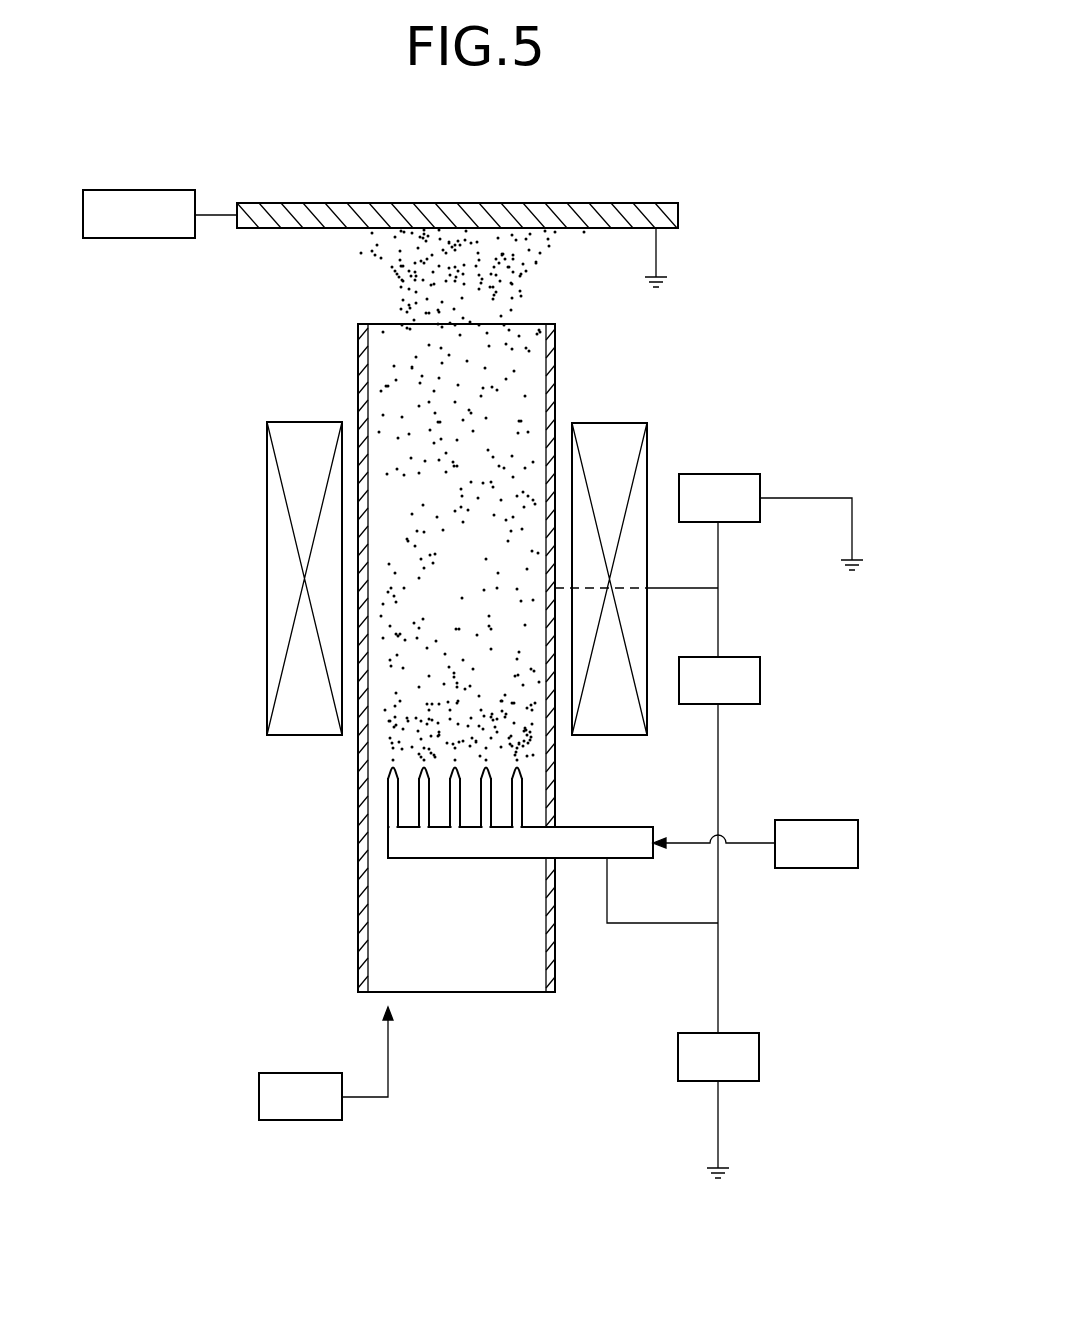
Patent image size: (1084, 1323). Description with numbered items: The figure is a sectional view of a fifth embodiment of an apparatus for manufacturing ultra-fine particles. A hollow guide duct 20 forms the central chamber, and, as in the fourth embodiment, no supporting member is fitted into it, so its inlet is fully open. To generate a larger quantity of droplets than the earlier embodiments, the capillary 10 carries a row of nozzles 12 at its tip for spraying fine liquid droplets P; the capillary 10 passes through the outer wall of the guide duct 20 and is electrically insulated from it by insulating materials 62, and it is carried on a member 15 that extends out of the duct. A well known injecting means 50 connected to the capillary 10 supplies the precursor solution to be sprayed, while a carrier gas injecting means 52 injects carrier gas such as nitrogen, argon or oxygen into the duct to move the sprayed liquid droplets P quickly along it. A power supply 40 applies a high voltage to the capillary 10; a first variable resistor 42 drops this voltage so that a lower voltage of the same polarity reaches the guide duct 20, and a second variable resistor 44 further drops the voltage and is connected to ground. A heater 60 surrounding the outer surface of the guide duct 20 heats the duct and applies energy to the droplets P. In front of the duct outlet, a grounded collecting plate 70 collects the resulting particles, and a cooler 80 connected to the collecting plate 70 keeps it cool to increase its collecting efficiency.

The capillary 10 is at (388, 815).
The nozzle 12 is at (390, 768).
The nozzle support / manifold 15 is at (627, 828).
The guide duct 20 is at (365, 400).
The power supply 40 is at (759, 1055).
The first variable resistor 42 is at (760, 680).
The second variable resistor 44 is at (760, 487).
The injecting means 50 is at (833, 820).
The carrier gas injecting means 52 is at (300, 1120).
The heater 60 is at (267, 458).
The insulating materials 62 is at (355, 868).
The collecting plate 70 is at (678, 213).
The cooler 80 is at (137, 238).
The sprayed liquid droplets P is at (388, 533).